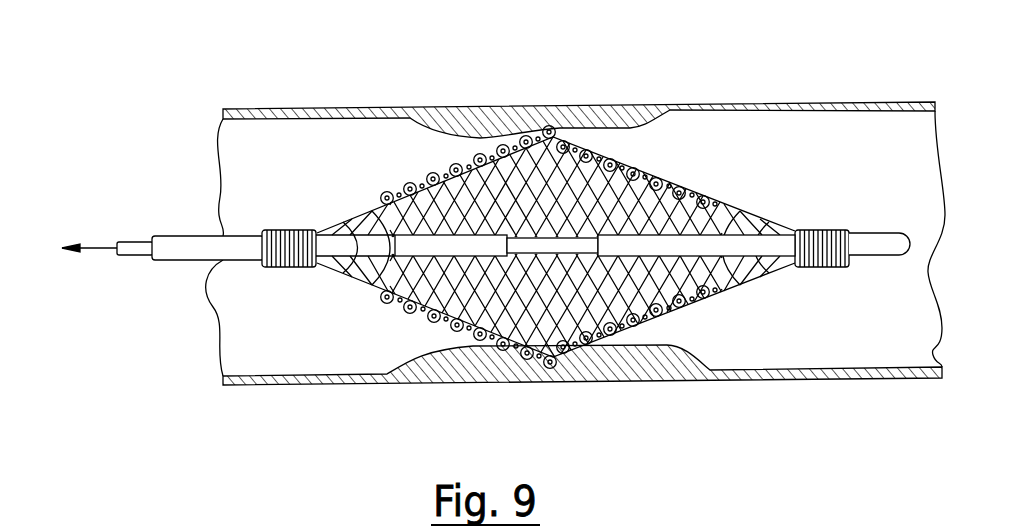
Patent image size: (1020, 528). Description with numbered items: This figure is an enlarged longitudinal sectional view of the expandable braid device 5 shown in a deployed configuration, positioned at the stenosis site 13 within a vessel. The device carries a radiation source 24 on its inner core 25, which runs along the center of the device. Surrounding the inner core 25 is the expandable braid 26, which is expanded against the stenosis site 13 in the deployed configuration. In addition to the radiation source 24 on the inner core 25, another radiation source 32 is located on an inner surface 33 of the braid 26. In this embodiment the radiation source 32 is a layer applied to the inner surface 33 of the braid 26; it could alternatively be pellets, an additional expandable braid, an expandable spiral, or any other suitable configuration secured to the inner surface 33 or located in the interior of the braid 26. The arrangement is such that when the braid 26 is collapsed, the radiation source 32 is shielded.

The expandable braid device 5 is at (263, 208).
The stenosis site 13 is at (518, 133).
The radiation source 24 is at (555, 246).
The inner core 25 is at (672, 245).
The braid 26 is at (437, 180).
The radiation source 32 is at (505, 153).
The inner surface 33 is at (662, 173).